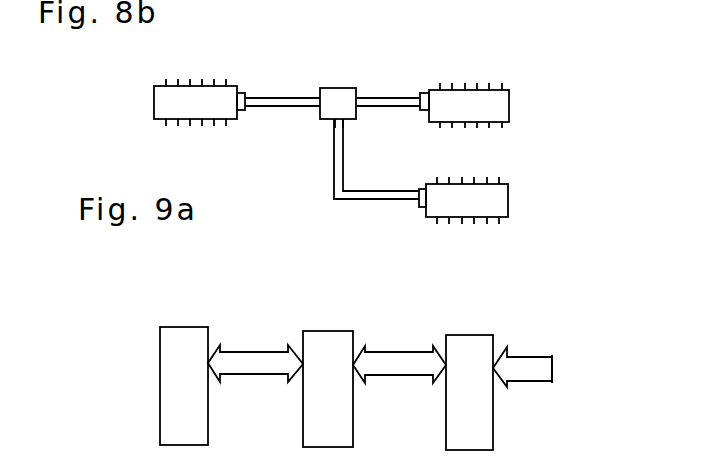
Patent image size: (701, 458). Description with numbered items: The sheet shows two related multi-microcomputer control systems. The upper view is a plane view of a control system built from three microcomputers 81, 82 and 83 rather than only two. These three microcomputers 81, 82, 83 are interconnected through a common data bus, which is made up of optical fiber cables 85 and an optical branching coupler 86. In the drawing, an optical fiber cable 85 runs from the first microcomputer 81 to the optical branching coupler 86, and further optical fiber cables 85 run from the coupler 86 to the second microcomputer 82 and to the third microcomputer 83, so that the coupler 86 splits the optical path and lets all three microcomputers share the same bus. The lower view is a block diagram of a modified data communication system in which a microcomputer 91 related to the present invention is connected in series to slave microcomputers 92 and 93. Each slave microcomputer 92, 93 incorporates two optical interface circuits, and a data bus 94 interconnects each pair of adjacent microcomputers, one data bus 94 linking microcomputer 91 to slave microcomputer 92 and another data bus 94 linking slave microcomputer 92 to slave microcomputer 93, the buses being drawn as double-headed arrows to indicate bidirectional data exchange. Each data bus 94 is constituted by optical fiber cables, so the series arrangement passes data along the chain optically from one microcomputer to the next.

In FIG. 8b, the microcomputer 81 is at (199, 92).
In FIG. 8b, the microcomputer 82 is at (467, 90).
In FIG. 8b, the microcomputer 83 is at (478, 184).
In FIG. 8b, the optical fiber cable 85 is at (277, 96).
In FIG. 8b, the optical branching coupler 86 is at (340, 88).
In FIG. 9a, the microcomputer 91 is at (190, 327).
In FIG. 9a, the slave microcomputer 92 is at (328, 331).
In FIG. 9a, the slave microcomputer 93 is at (477, 335).
In FIG. 9a, the data bus 94 is at (262, 352).